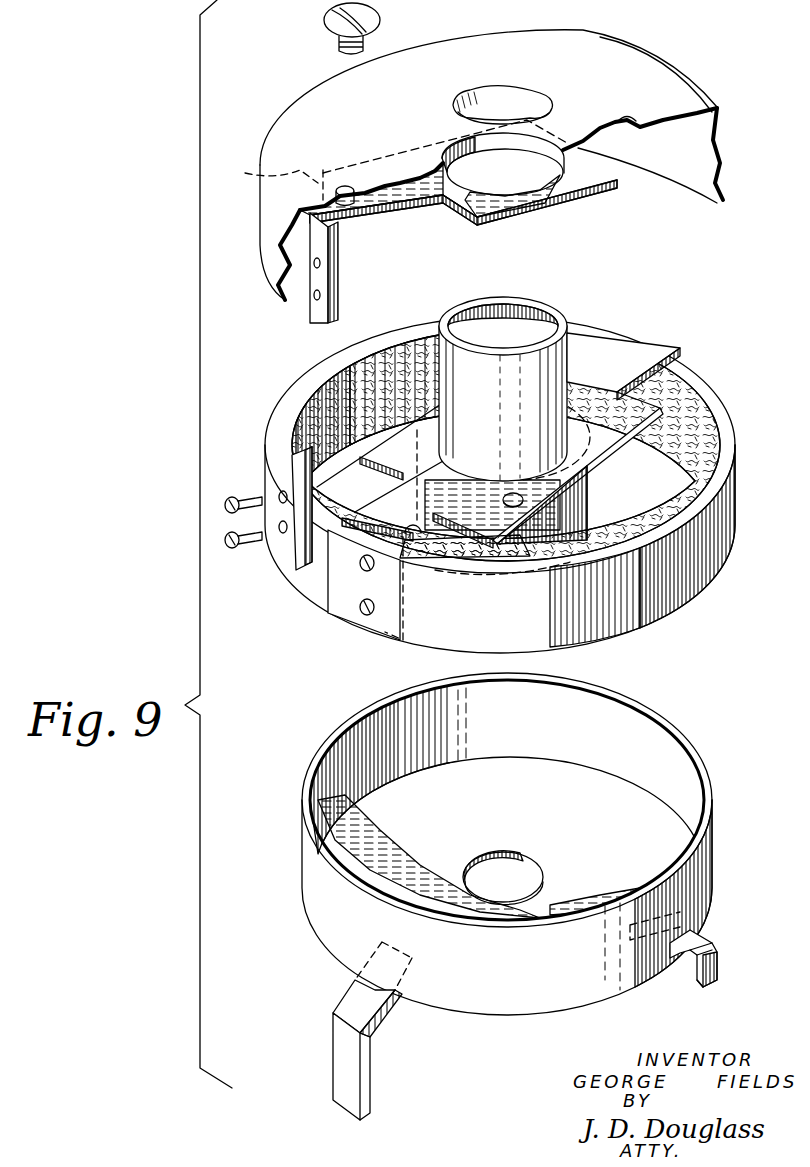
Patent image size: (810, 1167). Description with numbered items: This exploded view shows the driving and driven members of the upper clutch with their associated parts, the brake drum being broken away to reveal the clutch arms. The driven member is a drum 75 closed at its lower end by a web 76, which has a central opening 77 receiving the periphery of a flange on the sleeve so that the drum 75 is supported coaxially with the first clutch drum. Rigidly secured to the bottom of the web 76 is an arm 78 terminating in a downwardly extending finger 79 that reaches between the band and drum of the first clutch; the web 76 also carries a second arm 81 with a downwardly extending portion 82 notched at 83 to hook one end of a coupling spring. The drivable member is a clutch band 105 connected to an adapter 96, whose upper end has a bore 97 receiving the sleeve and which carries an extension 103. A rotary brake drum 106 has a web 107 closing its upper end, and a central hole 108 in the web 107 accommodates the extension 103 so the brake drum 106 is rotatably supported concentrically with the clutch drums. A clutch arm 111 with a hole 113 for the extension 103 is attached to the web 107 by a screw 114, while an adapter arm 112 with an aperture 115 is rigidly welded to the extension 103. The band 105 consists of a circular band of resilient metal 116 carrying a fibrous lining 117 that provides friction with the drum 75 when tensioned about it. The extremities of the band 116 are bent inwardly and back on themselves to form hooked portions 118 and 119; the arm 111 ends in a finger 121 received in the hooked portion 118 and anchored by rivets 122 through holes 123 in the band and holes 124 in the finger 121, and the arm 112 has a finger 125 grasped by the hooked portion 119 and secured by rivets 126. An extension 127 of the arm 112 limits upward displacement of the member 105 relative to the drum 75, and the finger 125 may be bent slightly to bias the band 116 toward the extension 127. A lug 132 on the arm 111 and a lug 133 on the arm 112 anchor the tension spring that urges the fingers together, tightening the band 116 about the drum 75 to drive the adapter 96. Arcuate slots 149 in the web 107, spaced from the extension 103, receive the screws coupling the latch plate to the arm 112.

The driven member or drum 75 is at (708, 832).
The web 76 is at (510, 875).
The opening 77 is at (522, 882).
The arm 78 is at (382, 1017).
The finger 79 is at (343, 1062).
The second arm 81 is at (700, 938).
The downwardly extending portion 82 is at (720, 965).
The notch 83 is at (692, 978).
The adapter 96 is at (586, 520).
The bore 97 is at (535, 325).
The extension 103 is at (430, 342).
The drivable member or clutch band 105 is at (735, 570).
The rotary brake member or drum 106 is at (724, 197).
The web 107 is at (695, 128).
The central hole 108 is at (518, 143).
The clutch arm 111 is at (588, 190).
The adapter arm 112 is at (617, 433).
The hole 113 is at (490, 194).
The screw 114 is at (325, 25).
The aperture 115 is at (400, 472).
The circular band of resilient metal 116 is at (725, 408).
The lining 117 is at (727, 448).
The hooked portion 118 is at (300, 562).
The hooked portion 119 is at (332, 585).
The finger 121 is at (340, 286).
The rivets 122 is at (225, 513).
The holes 123 is at (280, 497).
The holes 124 is at (314, 298).
The finger 125 is at (410, 640).
The rivets 126 is at (372, 572).
The extension 127 is at (660, 346).
The lug 132 is at (260, 172).
The lug 133 is at (436, 555).
The arcuate slots 149 is at (486, 95).